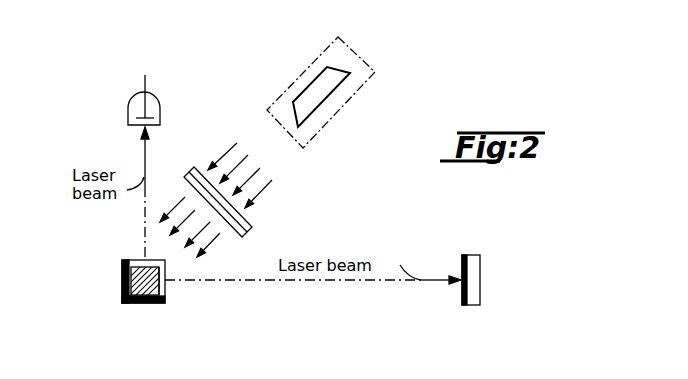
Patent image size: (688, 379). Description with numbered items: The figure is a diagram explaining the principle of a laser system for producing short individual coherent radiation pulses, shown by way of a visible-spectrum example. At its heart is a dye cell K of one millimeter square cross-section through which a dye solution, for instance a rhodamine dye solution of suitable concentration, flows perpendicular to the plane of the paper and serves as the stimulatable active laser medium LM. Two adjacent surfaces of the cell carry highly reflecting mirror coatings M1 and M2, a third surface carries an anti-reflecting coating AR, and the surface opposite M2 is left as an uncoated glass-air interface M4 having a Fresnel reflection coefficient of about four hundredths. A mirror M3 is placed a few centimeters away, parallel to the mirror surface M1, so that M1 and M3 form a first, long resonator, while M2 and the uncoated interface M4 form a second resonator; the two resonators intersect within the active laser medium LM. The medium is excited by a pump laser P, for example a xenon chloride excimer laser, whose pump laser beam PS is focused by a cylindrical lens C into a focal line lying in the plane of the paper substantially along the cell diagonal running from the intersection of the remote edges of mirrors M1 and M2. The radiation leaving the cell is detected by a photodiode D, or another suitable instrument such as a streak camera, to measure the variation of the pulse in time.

The photodiode D is at (128, 107).
The pump laser P is at (350, 63).
The pump laser beam PS is at (268, 163).
The cylindrical lens C is at (226, 203).
The uncoated glass-air interface M4 is at (128, 258).
The mirror coating M1 is at (122, 280).
The mirror coating M2 is at (142, 305).
The mirror M3 is at (463, 296).
The dye cell K is at (109, 302).
The active laser medium LM is at (127, 303).
The anti-reflecting coating AR is at (163, 283).